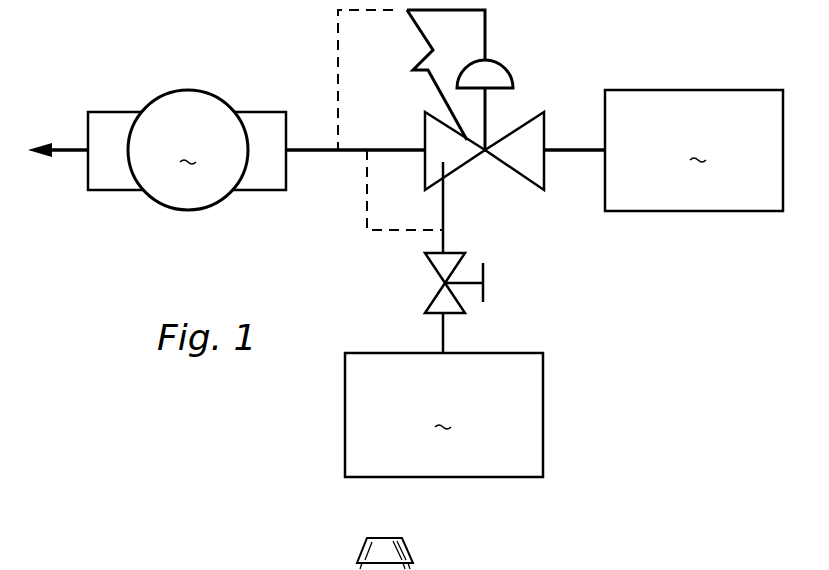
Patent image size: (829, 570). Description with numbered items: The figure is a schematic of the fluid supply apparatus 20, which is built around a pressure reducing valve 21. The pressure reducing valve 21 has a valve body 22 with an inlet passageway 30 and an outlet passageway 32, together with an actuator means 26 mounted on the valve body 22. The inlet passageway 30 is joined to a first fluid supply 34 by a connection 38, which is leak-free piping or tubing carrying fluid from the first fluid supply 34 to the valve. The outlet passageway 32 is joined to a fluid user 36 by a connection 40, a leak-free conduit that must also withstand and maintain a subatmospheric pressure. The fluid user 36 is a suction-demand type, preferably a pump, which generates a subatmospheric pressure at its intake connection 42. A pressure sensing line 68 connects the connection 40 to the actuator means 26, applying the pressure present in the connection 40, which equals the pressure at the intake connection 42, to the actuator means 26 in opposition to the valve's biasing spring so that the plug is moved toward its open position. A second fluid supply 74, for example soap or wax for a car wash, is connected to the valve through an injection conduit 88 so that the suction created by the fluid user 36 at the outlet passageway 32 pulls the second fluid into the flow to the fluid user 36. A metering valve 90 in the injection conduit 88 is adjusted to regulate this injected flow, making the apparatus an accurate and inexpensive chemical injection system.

The fluid supply apparatus 20 is at (312, 38).
The pressure reducing valve 21 is at (493, 122).
The valve body 22 is at (528, 143).
The actuator means 26 is at (493, 78).
The inlet passageway 30 is at (520, 168).
The outlet passageway 32 is at (430, 163).
The first fluid supply 34 is at (694, 150).
The fluid user 36 is at (188, 150).
The connection 38 is at (577, 152).
The connection 40 is at (313, 140).
The intake connection 42 is at (254, 182).
The pressure sensing line 68 is at (413, 32).
The second fluid supply 74 is at (444, 415).
The injection conduit 88 is at (367, 220).
The metering valve 90 is at (438, 302).